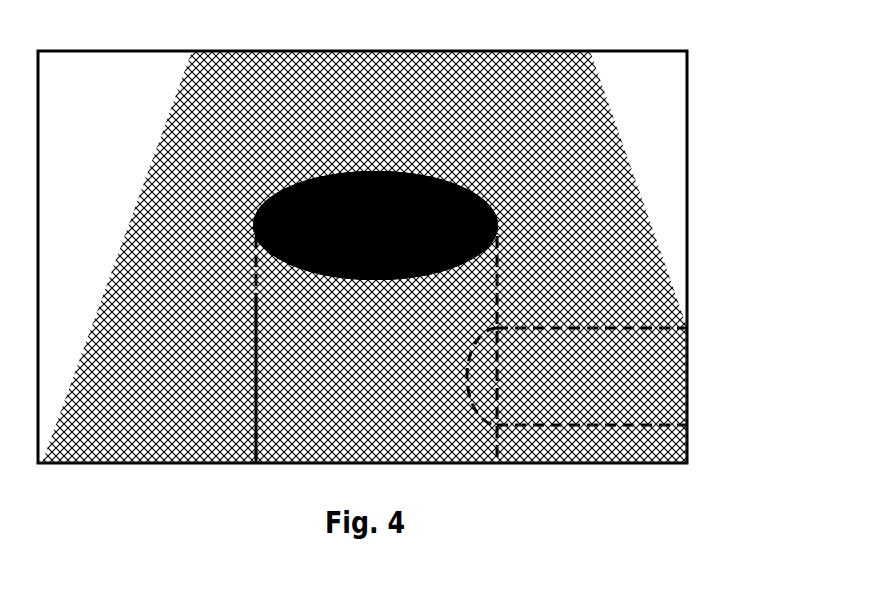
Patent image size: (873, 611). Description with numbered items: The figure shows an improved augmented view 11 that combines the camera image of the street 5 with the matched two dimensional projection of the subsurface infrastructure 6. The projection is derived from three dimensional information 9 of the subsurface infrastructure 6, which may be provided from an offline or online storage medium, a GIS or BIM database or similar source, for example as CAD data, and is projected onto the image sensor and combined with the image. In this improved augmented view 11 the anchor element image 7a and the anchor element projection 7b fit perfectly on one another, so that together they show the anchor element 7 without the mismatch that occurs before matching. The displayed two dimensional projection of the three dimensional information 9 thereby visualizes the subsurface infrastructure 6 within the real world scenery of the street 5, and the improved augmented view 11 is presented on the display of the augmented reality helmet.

The improved augmented view 11 is at (143, 50).
The street 5 is at (615, 118).
The anchor element image 7a is at (375, 225).
The anchor element projection 7b is at (375, 225).
The anchor element 7 is at (495, 208).
The three dimensional information 9 is at (253, 280).
The subsurface infrastructure 6 is at (255, 390).